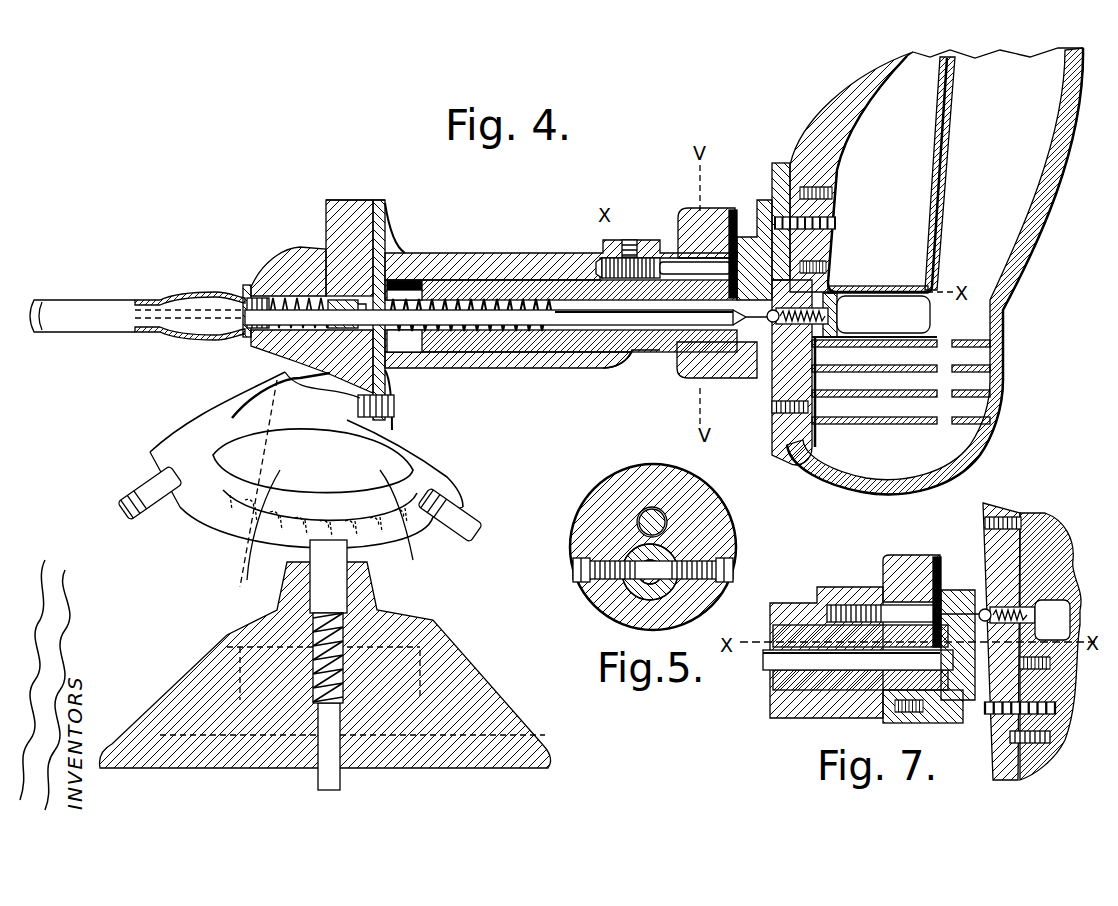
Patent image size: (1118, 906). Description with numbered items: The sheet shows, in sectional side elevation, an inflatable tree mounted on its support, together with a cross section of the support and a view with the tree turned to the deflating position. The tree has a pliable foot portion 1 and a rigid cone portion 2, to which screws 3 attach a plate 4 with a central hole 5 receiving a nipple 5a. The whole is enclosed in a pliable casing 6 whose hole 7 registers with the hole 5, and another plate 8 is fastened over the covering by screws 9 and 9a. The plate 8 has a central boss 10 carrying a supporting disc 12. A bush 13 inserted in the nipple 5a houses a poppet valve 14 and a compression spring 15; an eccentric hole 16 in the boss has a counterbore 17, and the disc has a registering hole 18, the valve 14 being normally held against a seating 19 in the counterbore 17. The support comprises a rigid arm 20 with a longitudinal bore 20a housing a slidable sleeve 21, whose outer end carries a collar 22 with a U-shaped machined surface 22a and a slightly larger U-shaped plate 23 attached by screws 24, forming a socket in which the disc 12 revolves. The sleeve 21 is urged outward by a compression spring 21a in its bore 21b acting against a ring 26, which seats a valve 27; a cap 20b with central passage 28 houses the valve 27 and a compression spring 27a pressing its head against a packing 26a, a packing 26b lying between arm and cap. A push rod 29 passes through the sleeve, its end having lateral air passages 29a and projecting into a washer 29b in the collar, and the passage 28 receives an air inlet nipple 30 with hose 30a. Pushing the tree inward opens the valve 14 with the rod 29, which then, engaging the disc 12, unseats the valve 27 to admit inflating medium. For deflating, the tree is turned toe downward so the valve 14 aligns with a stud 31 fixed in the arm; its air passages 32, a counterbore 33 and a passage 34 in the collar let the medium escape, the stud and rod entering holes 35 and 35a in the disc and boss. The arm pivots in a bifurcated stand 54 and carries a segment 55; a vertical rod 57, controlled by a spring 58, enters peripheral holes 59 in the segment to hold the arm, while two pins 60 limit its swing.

In FIG. 4, the foot portion 1 is at (955, 170).
In FIG. 7, the foot portion 1 is at (1048, 592).
In FIG. 4, the rigid cone portion 2 is at (860, 118).
In FIG. 7, the rigid cone portion 2 is at (1030, 760).
In FIG. 4, the screws 3 is at (832, 193).
In FIG. 7, the screws 3 is at (1032, 665).
In FIG. 4, the plate 4 is at (805, 152).
In FIG. 7, the plate 4 is at (1032, 700).
In FIG. 4, the central hole 5 is at (826, 286).
In FIG. 7, the central hole 5 is at (1040, 660).
In FIG. 4, the nipple 5a is at (846, 330).
In FIG. 7, the nipple 5a is at (1042, 640).
In FIG. 4, the pliable casing 6 is at (846, 88).
In FIG. 7, the pliable casing 6 is at (997, 772).
In FIG. 4, the hole 7 is at (826, 350).
In FIG. 4, the plate 8 is at (786, 466).
In FIG. 7, the plate 8 is at (990, 775).
In FIG. 4, the screws 9 is at (780, 412).
In FIG. 7, the screws 9 is at (1003, 518).
In FIG. 4, the screws 9a is at (837, 222).
In FIG. 7, the screws 9a is at (1050, 712).
In FIG. 4, the central boss 10 is at (770, 250).
In FIG. 7, the central boss 10 is at (950, 605).
In FIG. 4, the supporting disc 12 is at (742, 240).
In FIG. 7, the supporting disc 12 is at (940, 600).
In FIG. 4, the bush 13 is at (770, 340).
In FIG. 7, the bush 13 is at (1028, 610).
In FIG. 4, the poppet valve 14 is at (760, 318).
In FIG. 7, the poppet valve 14 is at (1042, 615).
In FIG. 4, the compression spring 15 is at (830, 315).
In FIG. 7, the compression spring 15 is at (1037, 625).
In FIG. 4, the hole 16 is at (745, 332).
In FIG. 7, the hole 16 is at (880, 716).
In FIG. 4, the counterbore 17 is at (802, 270).
In FIG. 7, the counterbore 17 is at (1022, 600).
In FIG. 4, the hole 18 is at (700, 350).
In FIG. 4, the seating 19 is at (766, 332).
In FIG. 7, the seating 19 is at (1037, 690).
In FIG. 4, the rigid arm 20 is at (495, 262).
In FIG. 7, the rigid arm 20 is at (780, 605).
In FIG. 4, the longitudinal bore 20a is at (425, 285).
In FIG. 7, the longitudinal bore 20a is at (822, 600).
In FIG. 4, the cap 20b is at (300, 250).
In FIG. 4, the slidable sleeve 21 is at (532, 280).
In FIG. 5, the slidable sleeve 21 is at (700, 590).
In FIG. 7, the slidable sleeve 21 is at (772, 636).
In FIG. 4, the compression spring 21a is at (467, 290).
In FIG. 4, the bore 21b is at (467, 333).
In FIG. 4, the collar 22 is at (680, 366).
In FIG. 5, the collar 22 is at (714, 498).
In FIG. 7, the collar 22 is at (886, 557).
In FIG. 7, the U-shaped machined surface 22a is at (962, 692).
In FIG. 4, the U-shaped plate 23 is at (765, 280).
In FIG. 7, the U-shaped plate 23 is at (960, 702).
In FIG. 7, the screws 24 is at (947, 652).
In FIG. 4, the ring 26 is at (392, 243).
In FIG. 4, the packing 26a is at (405, 375).
In FIG. 4, the packing 26b is at (385, 207).
In FIG. 4, the valve 27 is at (345, 300).
In FIG. 4, the compression spring 27a is at (253, 344).
In FIG. 4, the central passage 28 is at (355, 292).
In FIG. 4, the push rod 29 is at (548, 330).
In FIG. 5, the push rod 29 is at (612, 600).
In FIG. 7, the push rod 29 is at (765, 668).
In FIG. 4, the air passages 29a is at (660, 357).
In FIG. 5, the air passages 29a is at (647, 575).
In FIG. 4, the washer 29b is at (700, 240).
In FIG. 7, the washer 29b is at (890, 590).
In FIG. 4, the air inlet nipple 30 is at (185, 298).
In FIG. 4, the hose 30a is at (70, 302).
In FIG. 4, the stud 31 is at (660, 265).
In FIG. 5, the stud 31 is at (652, 518).
In FIG. 7, the stud 31 is at (905, 605).
In FIG. 7, the air passages 32 is at (932, 600).
In FIG. 4, the counterbore 33 is at (720, 250).
In FIG. 7, the counterbore 33 is at (936, 605).
In FIG. 7, the passage 34 is at (946, 605).
In FIG. 4, the hole 35 is at (740, 250).
In FIG. 7, the hole 35 is at (902, 722).
In FIG. 4, the hole 35a is at (757, 262).
In FIG. 7, the hole 35a is at (935, 712).
In FIG. 4, the stand 54 is at (250, 585).
In FIG. 4, the segment 55 is at (225, 500).
In FIG. 4, the vertical rod 57 is at (320, 592).
In FIG. 4, the spring 58 is at (345, 628).
In FIG. 4, the holes 59 is at (290, 517).
In FIG. 4, the pins 60 is at (150, 522).